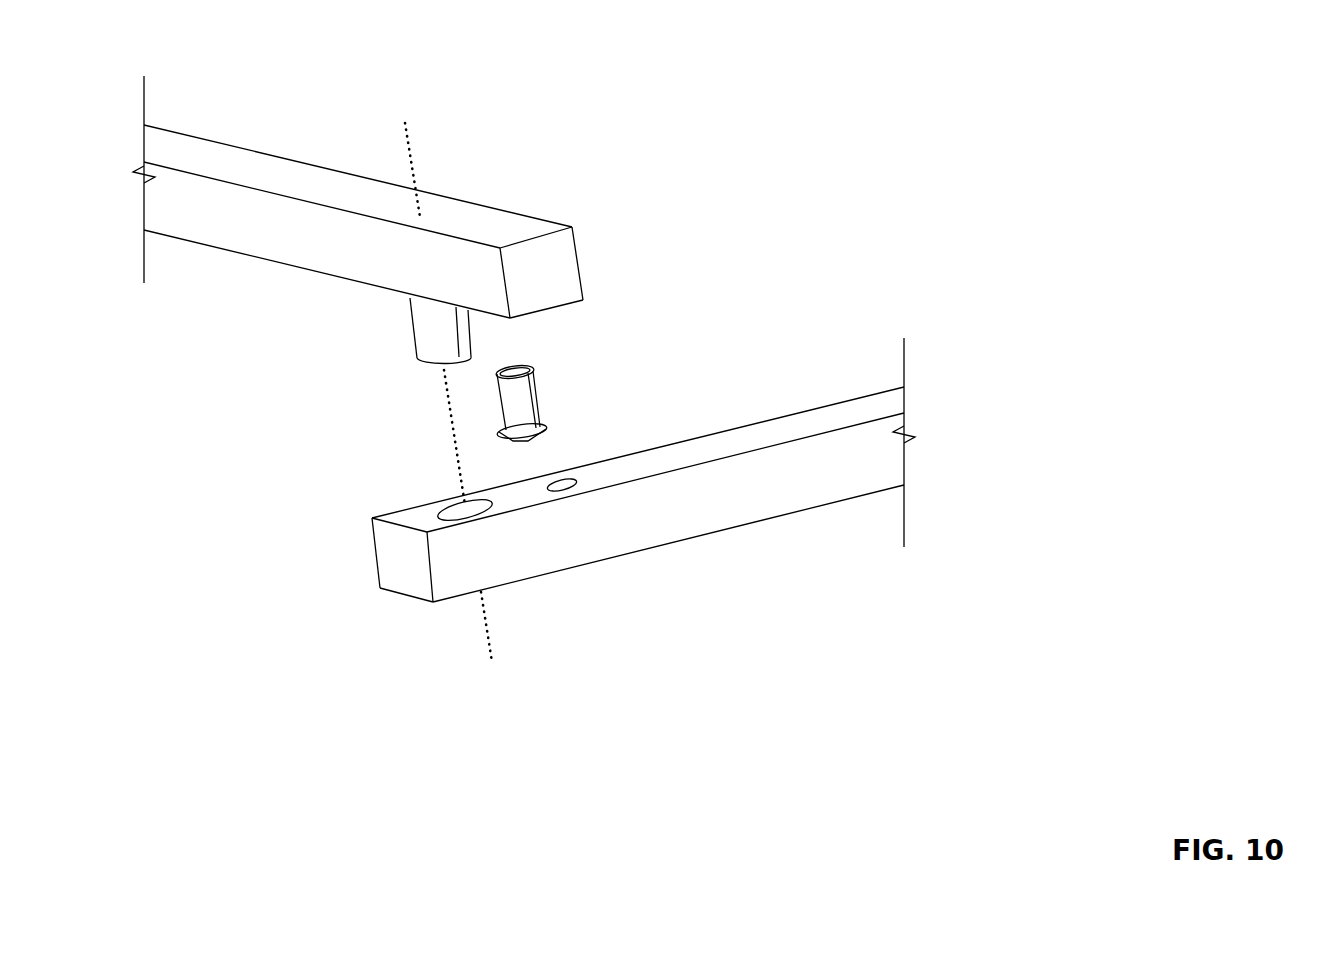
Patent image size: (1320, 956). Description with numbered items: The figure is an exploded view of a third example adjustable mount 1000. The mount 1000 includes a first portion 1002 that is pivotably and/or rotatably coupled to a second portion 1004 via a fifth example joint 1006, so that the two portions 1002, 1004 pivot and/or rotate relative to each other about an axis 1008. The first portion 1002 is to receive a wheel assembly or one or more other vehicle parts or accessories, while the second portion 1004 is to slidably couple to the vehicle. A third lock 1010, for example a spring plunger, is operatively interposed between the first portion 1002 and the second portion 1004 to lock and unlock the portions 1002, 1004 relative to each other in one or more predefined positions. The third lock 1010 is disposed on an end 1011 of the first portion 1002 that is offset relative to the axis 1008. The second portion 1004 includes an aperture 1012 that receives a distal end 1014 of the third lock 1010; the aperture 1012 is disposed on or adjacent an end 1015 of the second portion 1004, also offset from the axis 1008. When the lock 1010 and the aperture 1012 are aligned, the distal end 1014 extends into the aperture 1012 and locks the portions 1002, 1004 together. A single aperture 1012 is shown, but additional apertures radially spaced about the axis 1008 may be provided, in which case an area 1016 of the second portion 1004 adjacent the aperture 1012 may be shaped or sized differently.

The third example adjustable mount 1000 is at (712, 77).
The first portion 1002 is at (290, 182).
The second portion 1004 is at (803, 473).
The fifth example joint 1006 is at (322, 367).
The axis 1008 is at (490, 664).
The third lock 1010 is at (536, 380).
The end of the first portion 1011 is at (552, 275).
The aperture 1012 is at (562, 480).
The distal end of the third lock 1014 is at (536, 439).
The end of the second portion 1015 is at (400, 563).
The area of the second portion 1016 is at (425, 522).